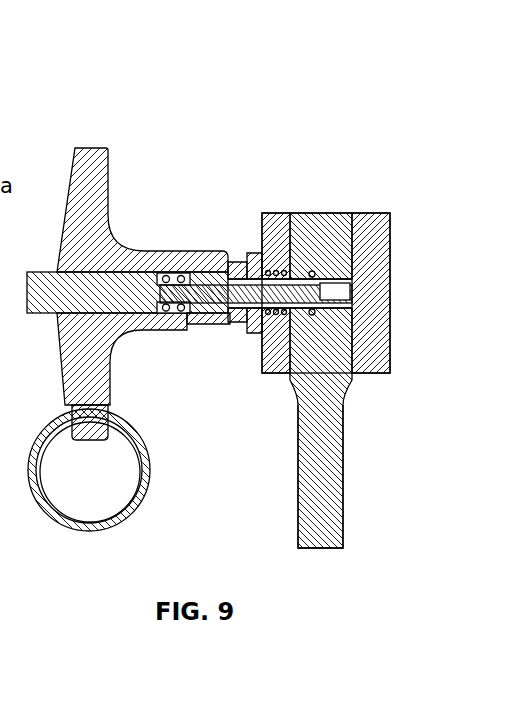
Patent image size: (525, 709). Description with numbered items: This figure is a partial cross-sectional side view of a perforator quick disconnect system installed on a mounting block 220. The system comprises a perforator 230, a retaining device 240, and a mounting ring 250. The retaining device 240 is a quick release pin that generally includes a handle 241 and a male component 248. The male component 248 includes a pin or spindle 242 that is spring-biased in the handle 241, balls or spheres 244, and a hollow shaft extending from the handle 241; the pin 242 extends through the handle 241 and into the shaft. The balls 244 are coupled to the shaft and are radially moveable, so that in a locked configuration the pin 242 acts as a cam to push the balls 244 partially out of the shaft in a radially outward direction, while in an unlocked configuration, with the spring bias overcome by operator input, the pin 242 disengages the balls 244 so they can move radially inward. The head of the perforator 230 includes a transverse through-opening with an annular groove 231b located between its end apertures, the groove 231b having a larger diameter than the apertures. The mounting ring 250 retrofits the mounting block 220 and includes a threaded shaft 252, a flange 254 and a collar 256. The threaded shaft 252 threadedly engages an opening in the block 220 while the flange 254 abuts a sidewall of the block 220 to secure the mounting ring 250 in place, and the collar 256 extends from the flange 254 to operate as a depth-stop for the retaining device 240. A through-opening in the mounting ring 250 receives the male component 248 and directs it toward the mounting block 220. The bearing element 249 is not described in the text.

The retaining device 240 is at (127, 302).
The handle 241 is at (166, 252).
The bearing 249 is at (174, 259).
The pin or spindle 242 is at (200, 307).
The collar 256 is at (226, 258).
The flange 254 is at (255, 262).
The threaded shaft or post 252 is at (272, 266).
The balls or spheres 244 is at (330, 277).
The annular groove 231b is at (328, 287).
The mounting block 220 is at (302, 380).
The male component 248 is at (308, 330).
The perforator 230 is at (278, 505).
The mounting ring 250 is at (237, 329).